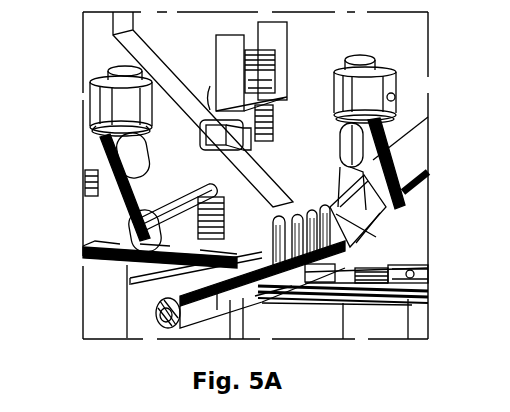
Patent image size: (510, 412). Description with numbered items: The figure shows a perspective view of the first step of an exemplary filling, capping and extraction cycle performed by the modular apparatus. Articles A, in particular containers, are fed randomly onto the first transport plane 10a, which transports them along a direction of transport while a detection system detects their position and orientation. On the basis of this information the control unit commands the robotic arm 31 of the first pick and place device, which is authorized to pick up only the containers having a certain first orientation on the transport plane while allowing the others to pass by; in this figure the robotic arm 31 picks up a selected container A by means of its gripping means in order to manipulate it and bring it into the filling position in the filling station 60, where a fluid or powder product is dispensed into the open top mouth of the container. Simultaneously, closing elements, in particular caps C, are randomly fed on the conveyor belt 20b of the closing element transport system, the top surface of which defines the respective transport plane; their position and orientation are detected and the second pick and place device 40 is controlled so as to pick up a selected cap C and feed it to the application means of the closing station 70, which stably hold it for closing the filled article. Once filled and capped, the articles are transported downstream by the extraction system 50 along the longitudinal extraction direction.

The second pick and place device 40 is at (100, 82).
The filling station 60 is at (200, 134).
The closing station 70 is at (273, 163).
The robotic arm 31 is at (352, 200).
The article A is at (420, 266).
The cap C is at (90, 238).
The conveyor belt 20b is at (125, 268).
The extraction system 50 is at (184, 311).
The first transport plane 10a is at (381, 268).